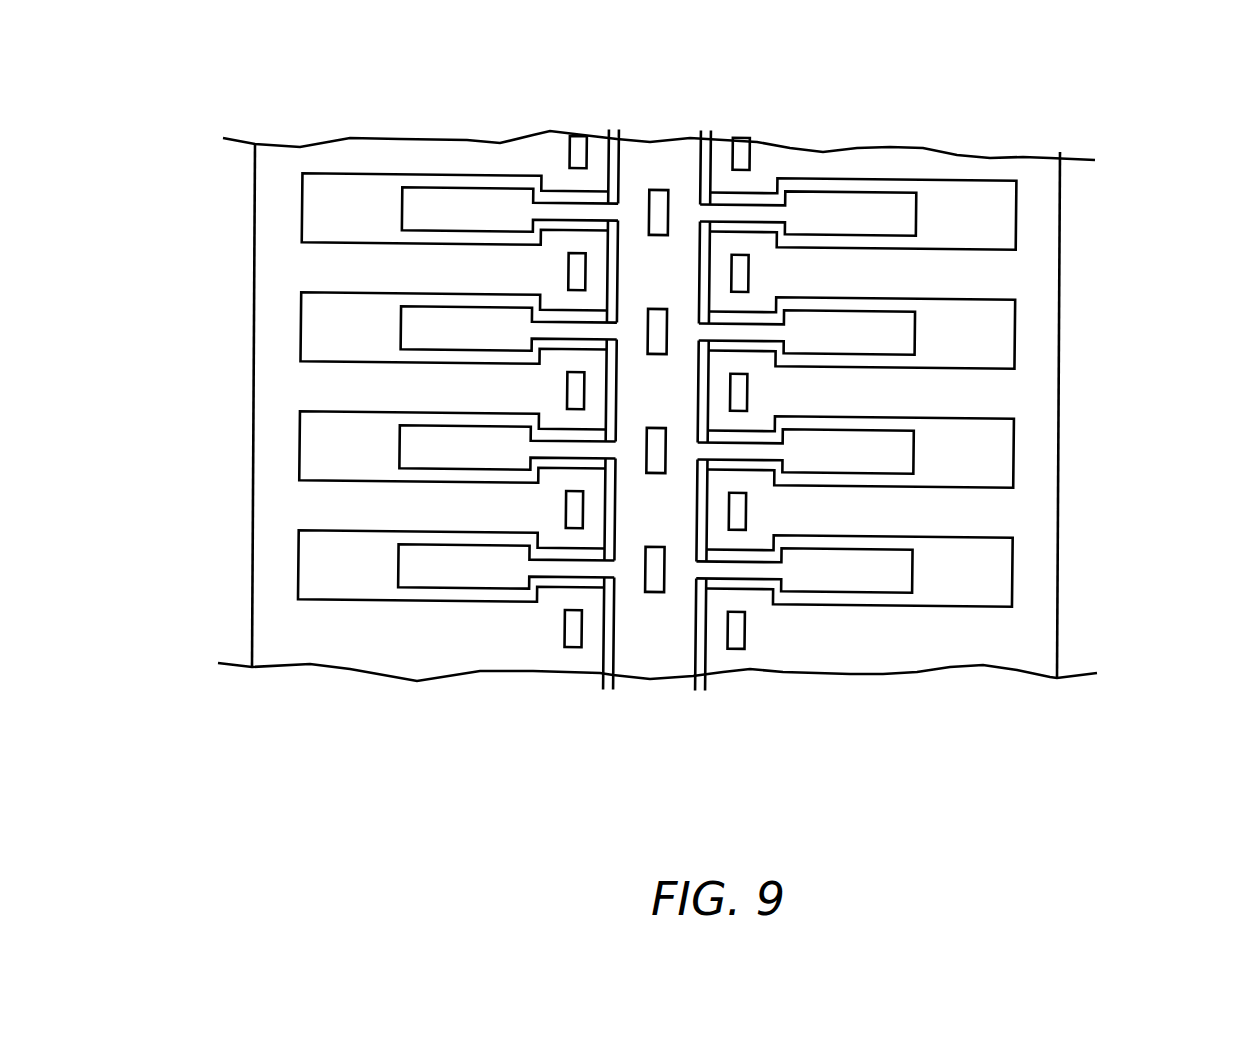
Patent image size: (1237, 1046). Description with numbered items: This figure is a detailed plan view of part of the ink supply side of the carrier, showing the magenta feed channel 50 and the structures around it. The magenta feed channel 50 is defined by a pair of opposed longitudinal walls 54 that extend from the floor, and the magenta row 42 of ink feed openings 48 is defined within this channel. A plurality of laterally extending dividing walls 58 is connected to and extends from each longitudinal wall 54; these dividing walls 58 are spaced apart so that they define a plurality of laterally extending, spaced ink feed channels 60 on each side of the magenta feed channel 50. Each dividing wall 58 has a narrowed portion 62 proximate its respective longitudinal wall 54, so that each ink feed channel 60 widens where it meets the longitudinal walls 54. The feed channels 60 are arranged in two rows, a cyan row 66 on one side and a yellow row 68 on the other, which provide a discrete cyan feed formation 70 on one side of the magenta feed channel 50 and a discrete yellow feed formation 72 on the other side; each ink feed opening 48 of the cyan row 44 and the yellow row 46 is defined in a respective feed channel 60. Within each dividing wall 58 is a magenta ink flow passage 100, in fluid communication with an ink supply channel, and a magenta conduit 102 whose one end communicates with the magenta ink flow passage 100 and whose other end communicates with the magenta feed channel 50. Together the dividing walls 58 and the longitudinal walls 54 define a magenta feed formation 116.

The magenta row of ink feed openings 42 is at (661, 138).
The cyan row of ink feed openings 44 is at (573, 134).
The yellow row of ink feed openings 46 is at (746, 134).
The ink feed opening 48 is at (670, 300).
The magenta feed channel 50 is at (655, 692).
The longitudinal wall 54 is at (606, 688).
The dividing wall 58 is at (298, 438).
The ink feed channel 60 is at (320, 380).
The narrowed portion 62 is at (585, 206).
The cyan row of feed channels 66 is at (338, 108).
The yellow row of feed channels 68 is at (916, 118).
The cyan feed formation 70 is at (225, 304).
The yellow feed formation 72 is at (1092, 445).
The magenta ink flow passage 100 is at (400, 210).
The magenta conduit 102 is at (588, 206).
The magenta feed formation 116 is at (808, 188).